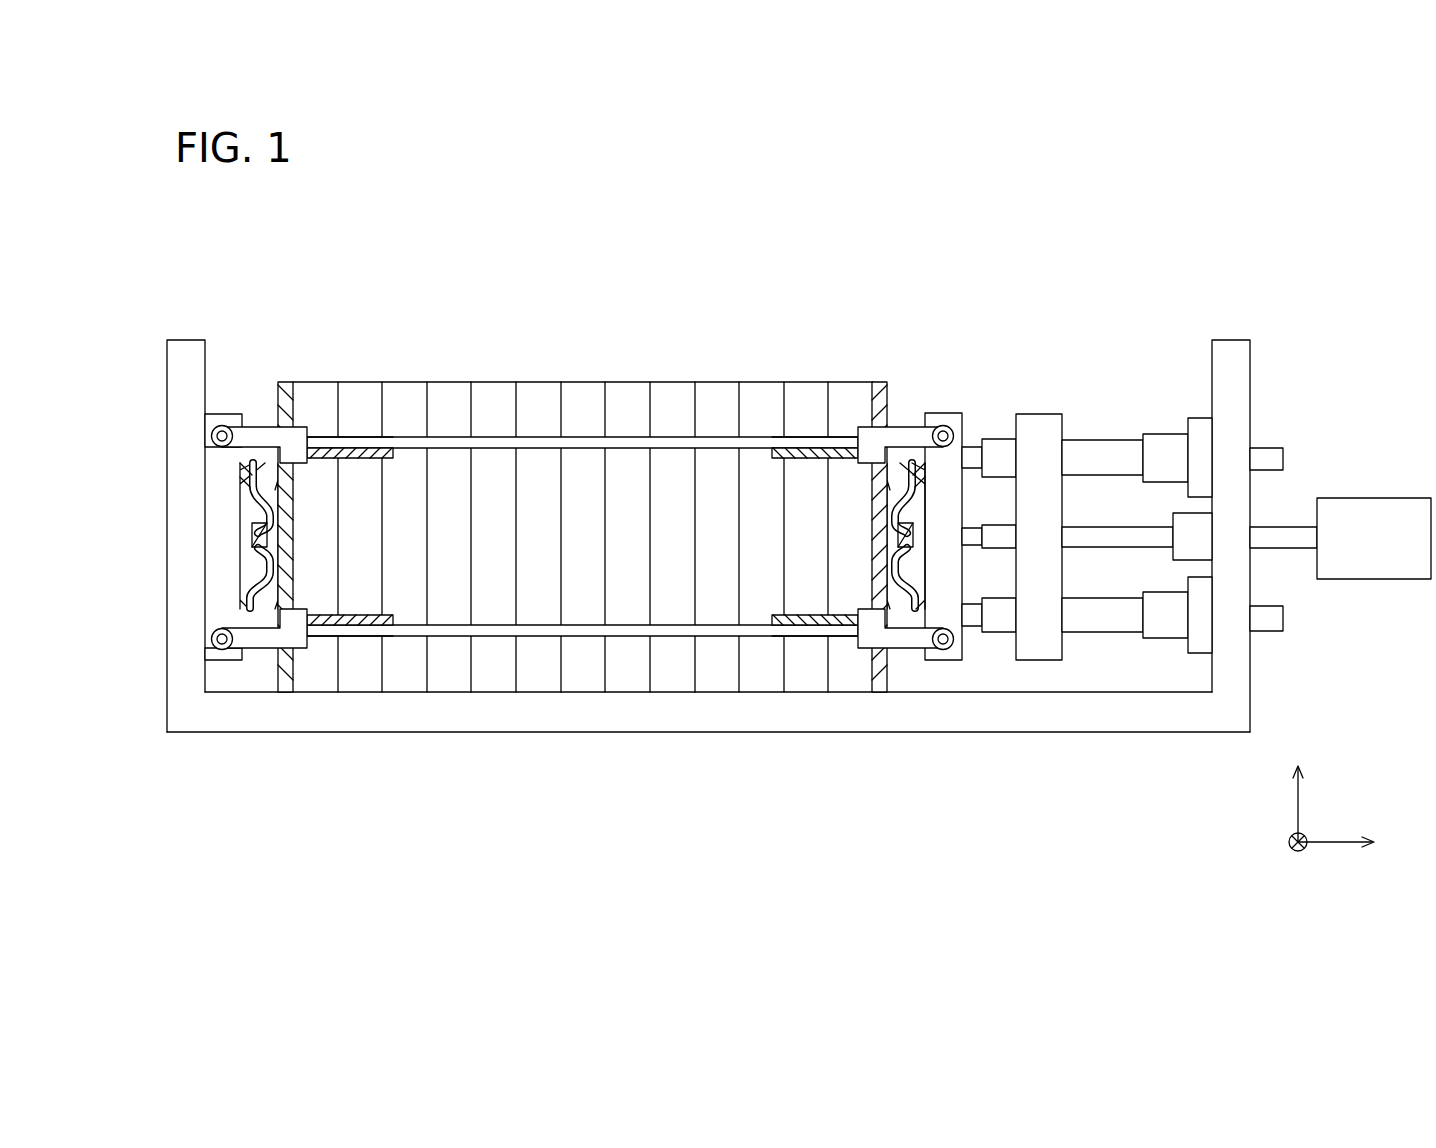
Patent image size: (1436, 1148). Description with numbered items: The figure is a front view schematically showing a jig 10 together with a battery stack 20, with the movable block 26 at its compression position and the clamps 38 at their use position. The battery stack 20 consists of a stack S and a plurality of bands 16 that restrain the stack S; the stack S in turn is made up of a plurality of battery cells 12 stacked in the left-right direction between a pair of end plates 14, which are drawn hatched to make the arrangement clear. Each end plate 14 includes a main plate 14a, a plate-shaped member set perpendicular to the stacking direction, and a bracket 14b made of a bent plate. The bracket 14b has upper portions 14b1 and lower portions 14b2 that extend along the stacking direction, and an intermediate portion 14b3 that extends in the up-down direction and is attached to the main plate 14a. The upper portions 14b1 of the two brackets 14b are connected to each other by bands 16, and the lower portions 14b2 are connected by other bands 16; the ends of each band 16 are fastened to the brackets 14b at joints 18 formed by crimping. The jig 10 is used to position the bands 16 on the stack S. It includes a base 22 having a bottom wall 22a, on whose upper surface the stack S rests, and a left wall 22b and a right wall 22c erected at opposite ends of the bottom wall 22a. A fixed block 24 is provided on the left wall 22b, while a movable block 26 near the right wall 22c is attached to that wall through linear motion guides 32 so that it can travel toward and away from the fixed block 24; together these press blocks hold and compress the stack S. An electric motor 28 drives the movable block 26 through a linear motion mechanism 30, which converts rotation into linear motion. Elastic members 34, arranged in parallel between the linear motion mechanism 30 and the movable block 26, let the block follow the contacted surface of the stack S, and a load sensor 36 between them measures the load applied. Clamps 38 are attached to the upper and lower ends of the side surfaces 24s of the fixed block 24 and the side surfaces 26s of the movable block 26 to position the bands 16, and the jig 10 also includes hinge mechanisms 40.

The jig 10 is at (1308, 285).
The battery cells 12 is at (358, 683).
The end plates 14 is at (272, 376).
The main plate 14a is at (284, 390).
The bracket 14b is at (326, 436).
The upper portions 14b1 is at (386, 452).
The lower portions 14b2 is at (386, 626).
The intermediate portion 14b3 is at (250, 477).
The bands 16 is at (630, 570).
The joints 18 is at (368, 448).
The battery stack 20 is at (955, 260).
The base 22 is at (1174, 752).
The bottom wall 22a is at (1046, 722).
The left wall 22b is at (176, 534).
The right wall 22c is at (1240, 675).
The fixed block 24 is at (197, 548).
The side surfaces 24s is at (242, 580).
The movable block 26 is at (970, 570).
The side surfaces 26s is at (923, 580).
The electric motor 28 is at (1372, 497).
The linear motion mechanism 30 is at (1117, 523).
The linear motion guides 32 is at (1098, 438).
The elastic members 34 is at (1000, 520).
The load sensor 36 is at (1017, 465).
The clamps 38 is at (218, 410).
The hinge mechanisms 40 is at (212, 424).
The stack S is at (884, 286).